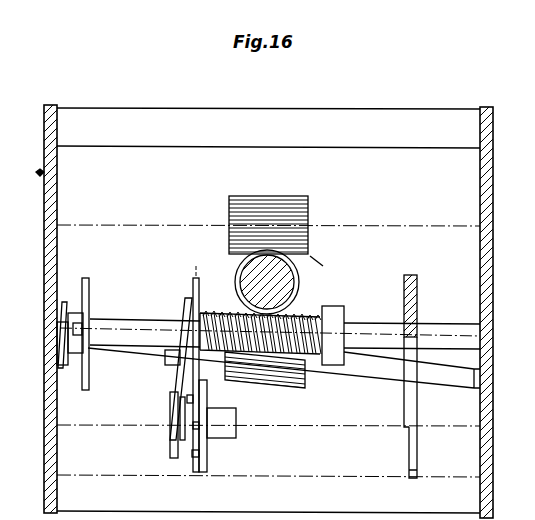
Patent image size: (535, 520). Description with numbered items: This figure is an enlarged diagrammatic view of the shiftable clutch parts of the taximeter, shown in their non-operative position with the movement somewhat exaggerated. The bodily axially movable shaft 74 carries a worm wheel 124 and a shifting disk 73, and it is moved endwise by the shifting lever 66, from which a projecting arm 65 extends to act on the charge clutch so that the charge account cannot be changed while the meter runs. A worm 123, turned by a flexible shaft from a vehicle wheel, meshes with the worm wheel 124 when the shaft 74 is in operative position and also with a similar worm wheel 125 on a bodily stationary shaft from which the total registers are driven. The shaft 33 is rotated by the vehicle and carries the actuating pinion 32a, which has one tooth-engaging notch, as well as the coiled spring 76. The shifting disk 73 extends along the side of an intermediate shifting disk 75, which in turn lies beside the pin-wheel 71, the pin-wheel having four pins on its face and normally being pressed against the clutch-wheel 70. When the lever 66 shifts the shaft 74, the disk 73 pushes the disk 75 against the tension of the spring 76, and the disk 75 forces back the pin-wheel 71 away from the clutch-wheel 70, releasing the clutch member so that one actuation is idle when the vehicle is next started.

The worm wheel 125 is at (309, 201).
The worm 123 is at (298, 281).
The shaft 33 is at (434, 328).
The spring 76 is at (232, 315).
The worm wheel 124 is at (280, 381).
The axially movable shaft 74 is at (284, 377).
The actuating pinion 32a is at (90, 293).
The shifting disk 73 is at (186, 300).
The intermediate shifting disk 75 is at (192, 360).
The pin-wheel 71 is at (211, 426).
The clutch-wheel 70 is at (170, 403).
The shifting lever 66 is at (418, 400).
The projecting arm 65 is at (418, 460).